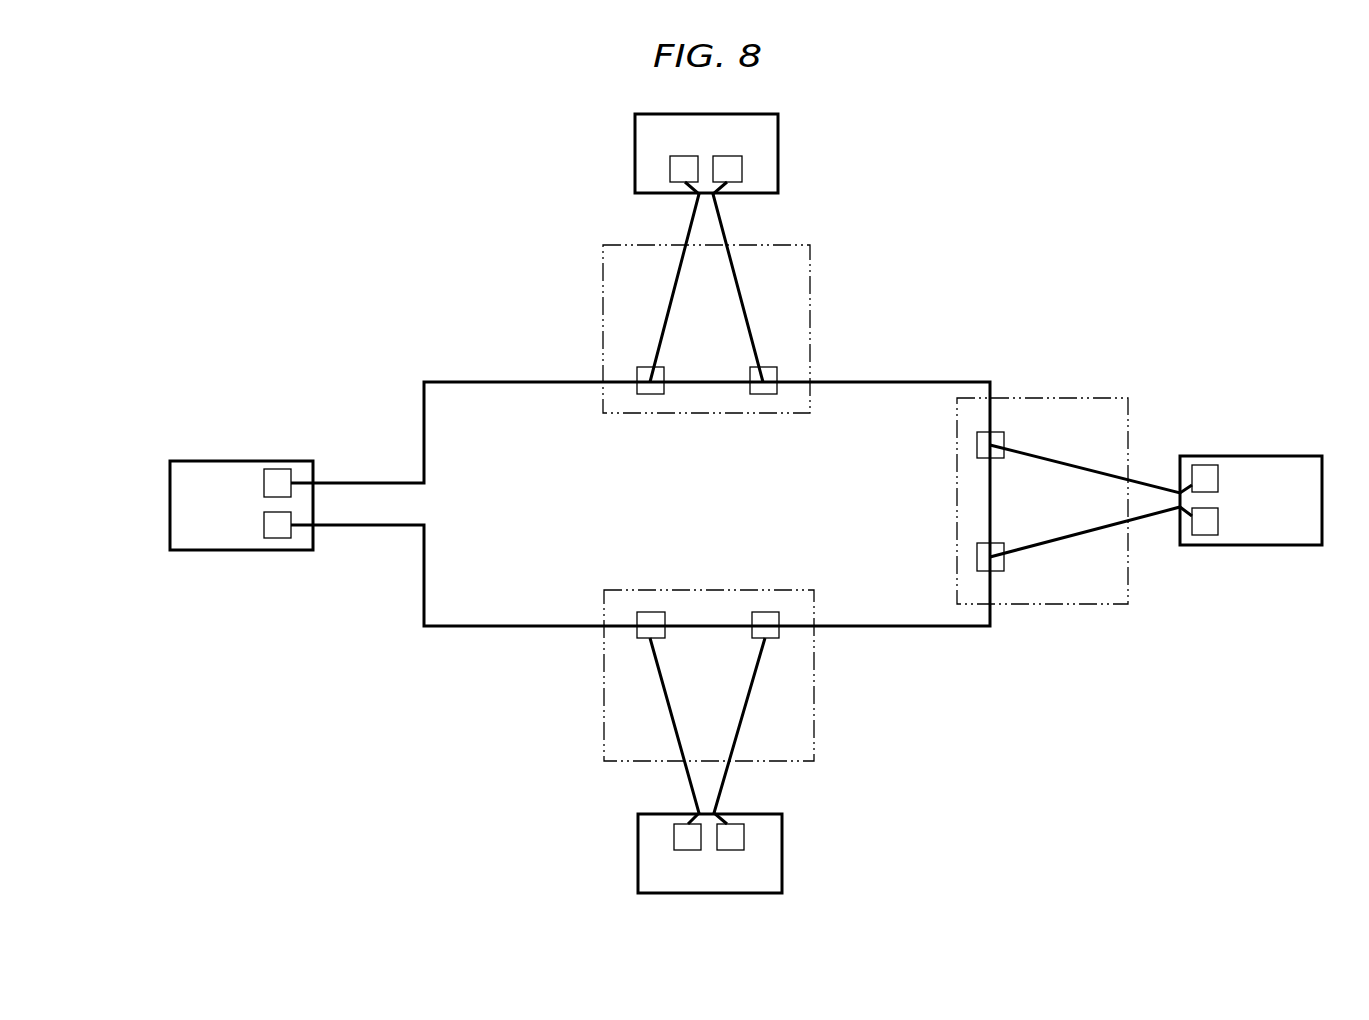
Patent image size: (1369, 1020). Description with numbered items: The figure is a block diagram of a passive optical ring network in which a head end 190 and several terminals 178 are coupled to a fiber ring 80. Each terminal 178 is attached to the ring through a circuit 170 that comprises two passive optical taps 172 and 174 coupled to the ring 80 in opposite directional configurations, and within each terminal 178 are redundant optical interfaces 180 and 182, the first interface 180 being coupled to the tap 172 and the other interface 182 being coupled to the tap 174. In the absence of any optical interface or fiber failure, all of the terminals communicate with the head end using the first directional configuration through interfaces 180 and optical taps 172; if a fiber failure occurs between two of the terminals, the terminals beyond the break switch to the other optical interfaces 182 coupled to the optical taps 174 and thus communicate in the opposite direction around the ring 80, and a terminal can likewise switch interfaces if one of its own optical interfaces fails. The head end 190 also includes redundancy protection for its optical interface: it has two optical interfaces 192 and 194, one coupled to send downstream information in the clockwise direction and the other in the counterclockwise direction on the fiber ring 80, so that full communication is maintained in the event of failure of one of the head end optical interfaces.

The fiber ring 80 is at (898, 382).
The circuit 170 is at (766, 612).
The passive optical tap 172 is at (651, 394).
The passive optical tap 174 is at (765, 394).
The terminal 178 is at (778, 136).
The optical interface 180 is at (670, 172).
The optical interface 182 is at (742, 172).
The head end 190 is at (237, 461).
The optical interface 192 is at (277, 469).
The optical interface 194 is at (278, 538).